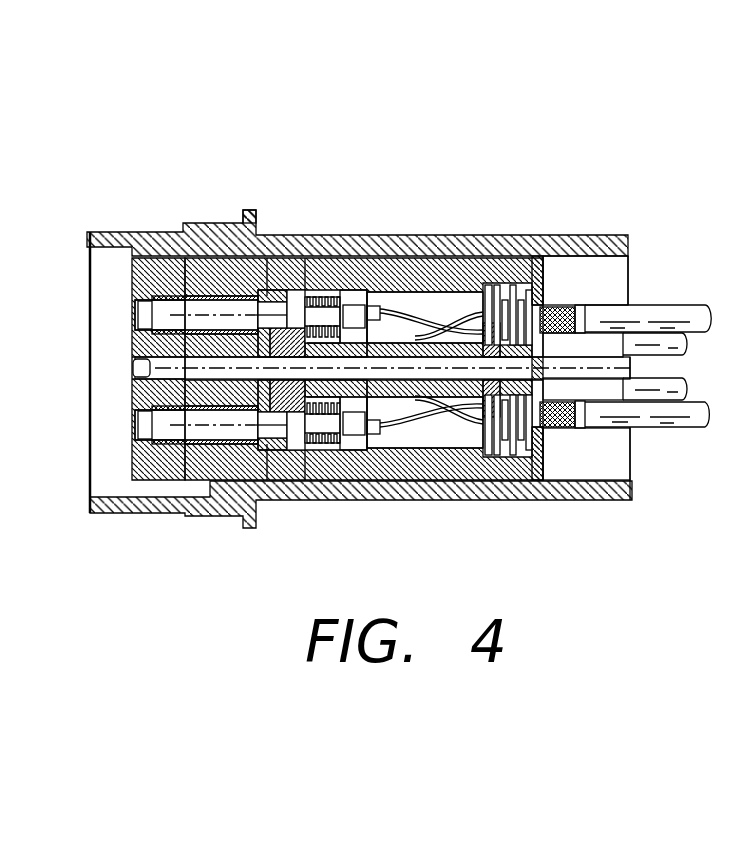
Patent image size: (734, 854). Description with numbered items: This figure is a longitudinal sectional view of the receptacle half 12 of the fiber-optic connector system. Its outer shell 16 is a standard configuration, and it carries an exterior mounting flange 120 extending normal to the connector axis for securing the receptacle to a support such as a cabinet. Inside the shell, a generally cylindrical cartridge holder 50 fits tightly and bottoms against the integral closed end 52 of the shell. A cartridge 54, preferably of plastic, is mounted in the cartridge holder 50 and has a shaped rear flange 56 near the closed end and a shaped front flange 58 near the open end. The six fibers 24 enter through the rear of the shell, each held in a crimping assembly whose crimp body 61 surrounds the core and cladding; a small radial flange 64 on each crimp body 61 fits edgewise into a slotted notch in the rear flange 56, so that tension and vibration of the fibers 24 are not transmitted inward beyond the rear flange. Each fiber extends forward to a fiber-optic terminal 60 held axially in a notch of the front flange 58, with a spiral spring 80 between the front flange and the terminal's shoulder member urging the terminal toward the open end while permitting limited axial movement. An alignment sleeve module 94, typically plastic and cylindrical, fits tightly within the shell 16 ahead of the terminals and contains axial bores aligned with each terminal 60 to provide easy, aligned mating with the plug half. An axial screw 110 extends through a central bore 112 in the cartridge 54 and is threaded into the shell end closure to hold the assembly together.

The receptacle half 12 is at (379, 125).
The outer shell 16 is at (458, 237).
The fibers 24 is at (716, 432).
The cartridge holder 50 is at (413, 258).
The integral closed end 52 is at (545, 283).
The cartridge 54 is at (446, 408).
The rear flange 56 is at (503, 290).
The front flange 58 is at (326, 297).
The fiber-optic terminals 60 is at (289, 268).
The crimp body 61 is at (597, 318).
The radial flange 64 is at (567, 240).
The spiral spring 80 is at (326, 447).
The alignment sleeve module 94 is at (166, 240).
The axial screw 110 is at (165, 390).
The central bore 112 is at (485, 398).
The exterior mounting flange 120 is at (248, 209).